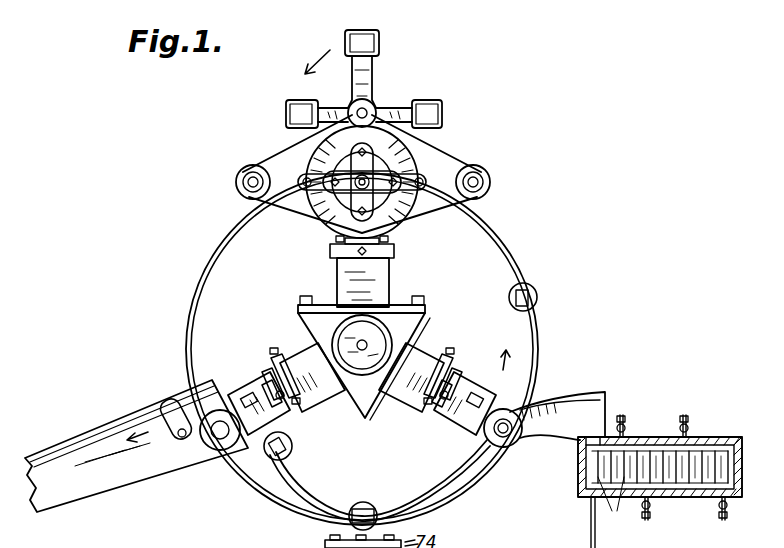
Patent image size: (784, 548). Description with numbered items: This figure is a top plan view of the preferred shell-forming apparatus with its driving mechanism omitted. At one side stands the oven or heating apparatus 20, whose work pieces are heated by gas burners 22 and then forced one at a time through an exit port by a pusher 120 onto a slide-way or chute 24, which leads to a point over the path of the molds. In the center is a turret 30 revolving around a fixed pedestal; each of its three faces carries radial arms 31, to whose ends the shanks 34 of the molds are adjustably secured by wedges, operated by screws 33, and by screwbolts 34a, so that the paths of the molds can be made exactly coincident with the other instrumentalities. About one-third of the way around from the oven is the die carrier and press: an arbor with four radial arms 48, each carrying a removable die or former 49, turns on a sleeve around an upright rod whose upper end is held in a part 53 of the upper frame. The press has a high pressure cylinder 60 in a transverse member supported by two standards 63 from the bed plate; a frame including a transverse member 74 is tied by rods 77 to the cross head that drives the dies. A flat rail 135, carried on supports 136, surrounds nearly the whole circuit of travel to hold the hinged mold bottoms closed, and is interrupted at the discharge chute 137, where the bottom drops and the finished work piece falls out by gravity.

The oven or heating apparatus 20 is at (722, 437).
The gas burners 22 is at (622, 412).
The slide-way or chute 24 is at (590, 430).
The turret 30 is at (386, 326).
The radial arms 31 is at (362, 335).
The screws 33 is at (392, 246).
The shanks of molds 34 is at (256, 392).
The screwbolts 34a is at (470, 362).
The radial arms of die carrier 48 is at (373, 85).
The die or former 49 is at (380, 45).
The part of upper frame 53 is at (354, 104).
The high pressure cylinder 60 is at (362, 182).
The standards 63 is at (245, 182).
The transverse member 74 is at (362, 180).
The rods 77 is at (423, 178).
The pusher 120 is at (590, 524).
The flat rail 135 is at (258, 288).
The supports 136 is at (538, 297).
The discharge chute 137 is at (136, 446).